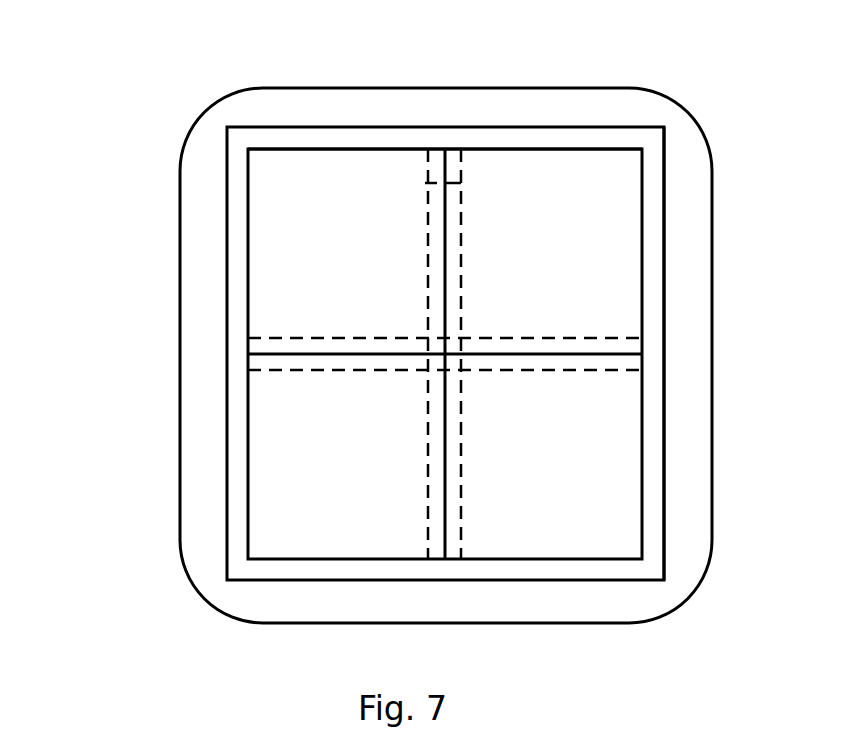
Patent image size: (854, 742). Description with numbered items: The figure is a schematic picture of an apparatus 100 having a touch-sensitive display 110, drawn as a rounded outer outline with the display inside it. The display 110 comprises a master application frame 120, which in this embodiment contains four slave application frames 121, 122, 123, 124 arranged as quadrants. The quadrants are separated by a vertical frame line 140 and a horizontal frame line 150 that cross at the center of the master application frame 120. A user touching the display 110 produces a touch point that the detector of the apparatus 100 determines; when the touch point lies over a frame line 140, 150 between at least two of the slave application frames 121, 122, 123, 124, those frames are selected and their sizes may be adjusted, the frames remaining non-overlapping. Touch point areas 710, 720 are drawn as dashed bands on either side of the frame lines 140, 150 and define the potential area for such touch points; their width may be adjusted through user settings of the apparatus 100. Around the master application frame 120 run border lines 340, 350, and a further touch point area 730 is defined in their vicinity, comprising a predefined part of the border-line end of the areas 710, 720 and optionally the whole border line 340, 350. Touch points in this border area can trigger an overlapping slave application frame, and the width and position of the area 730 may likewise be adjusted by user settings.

The apparatus 100 is at (180, 173).
The touch-sensitive display 110 is at (227, 250).
The master application frame 120 is at (248, 380).
The slave application frame 121 is at (283, 172).
The slave application frame 122 is at (600, 172).
The slave application frame 123 is at (280, 541).
The slave application frame 124 is at (608, 537).
The frame line 140 is at (445, 523).
The frame line 150 is at (312, 354).
The border line 340 is at (555, 148).
The border line 350 is at (646, 165).
The touch point area 710 is at (262, 337).
The touch point area 720 is at (463, 478).
The touch point area 730 is at (450, 186).